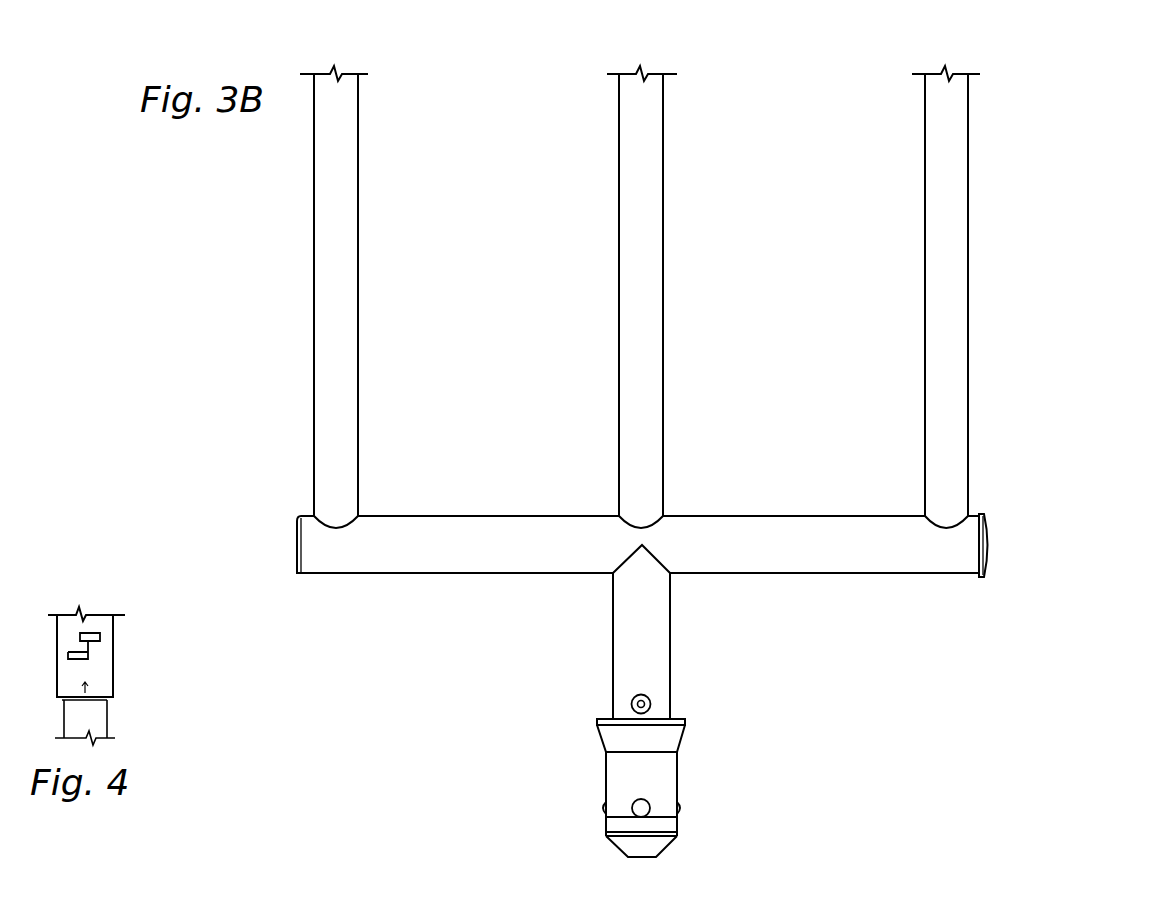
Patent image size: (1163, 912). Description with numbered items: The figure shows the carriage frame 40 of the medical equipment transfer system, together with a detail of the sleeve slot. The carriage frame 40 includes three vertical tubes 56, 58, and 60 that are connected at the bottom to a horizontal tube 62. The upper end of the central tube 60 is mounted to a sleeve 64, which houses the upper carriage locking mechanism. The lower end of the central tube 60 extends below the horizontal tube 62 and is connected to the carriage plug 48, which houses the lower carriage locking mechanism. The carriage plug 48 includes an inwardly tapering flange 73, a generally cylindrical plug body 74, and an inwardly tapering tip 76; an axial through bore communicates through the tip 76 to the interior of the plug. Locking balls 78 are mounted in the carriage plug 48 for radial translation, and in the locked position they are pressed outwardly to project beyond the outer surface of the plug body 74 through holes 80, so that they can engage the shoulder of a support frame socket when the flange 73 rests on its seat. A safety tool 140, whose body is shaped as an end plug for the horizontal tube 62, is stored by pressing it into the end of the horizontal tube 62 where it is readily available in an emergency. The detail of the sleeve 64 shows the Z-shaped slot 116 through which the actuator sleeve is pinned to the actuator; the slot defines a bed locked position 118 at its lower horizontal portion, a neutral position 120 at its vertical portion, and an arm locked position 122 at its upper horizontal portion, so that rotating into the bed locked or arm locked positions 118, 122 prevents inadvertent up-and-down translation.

In FIG. 3B, the carriage frame 40 is at (1056, 257).
In FIG. 3B, the carriage plug 48 is at (566, 812).
In FIG. 3B, the vertical tube 56 is at (312, 261).
In FIG. 3B, the vertical tube 58 is at (925, 271).
In FIG. 3B, the central tube 60 is at (619, 277).
In FIG. 3B, the horizontal tube 62 is at (884, 575).
In FIG. 4, the sleeve 64 is at (113, 647).
In FIG. 3B, the inwardly tapering flange 73 is at (600, 740).
In FIG. 3B, the plug body 74 is at (606, 782).
In FIG. 3B, the inwardly tapering tip 76 is at (614, 838).
In FIG. 3B, the locking balls 78 is at (684, 808).
In FIG. 3B, the holes 80 is at (670, 804).
In FIG. 4, the Z-shaped slot 116 is at (76, 663).
In FIG. 4, the bed locked position 118 is at (70, 652).
In FIG. 4, the neutral position 120 is at (88, 656).
In FIG. 4, the arm locked position 122 is at (100, 634).
In FIG. 3B, the safety tool 140 is at (992, 540).